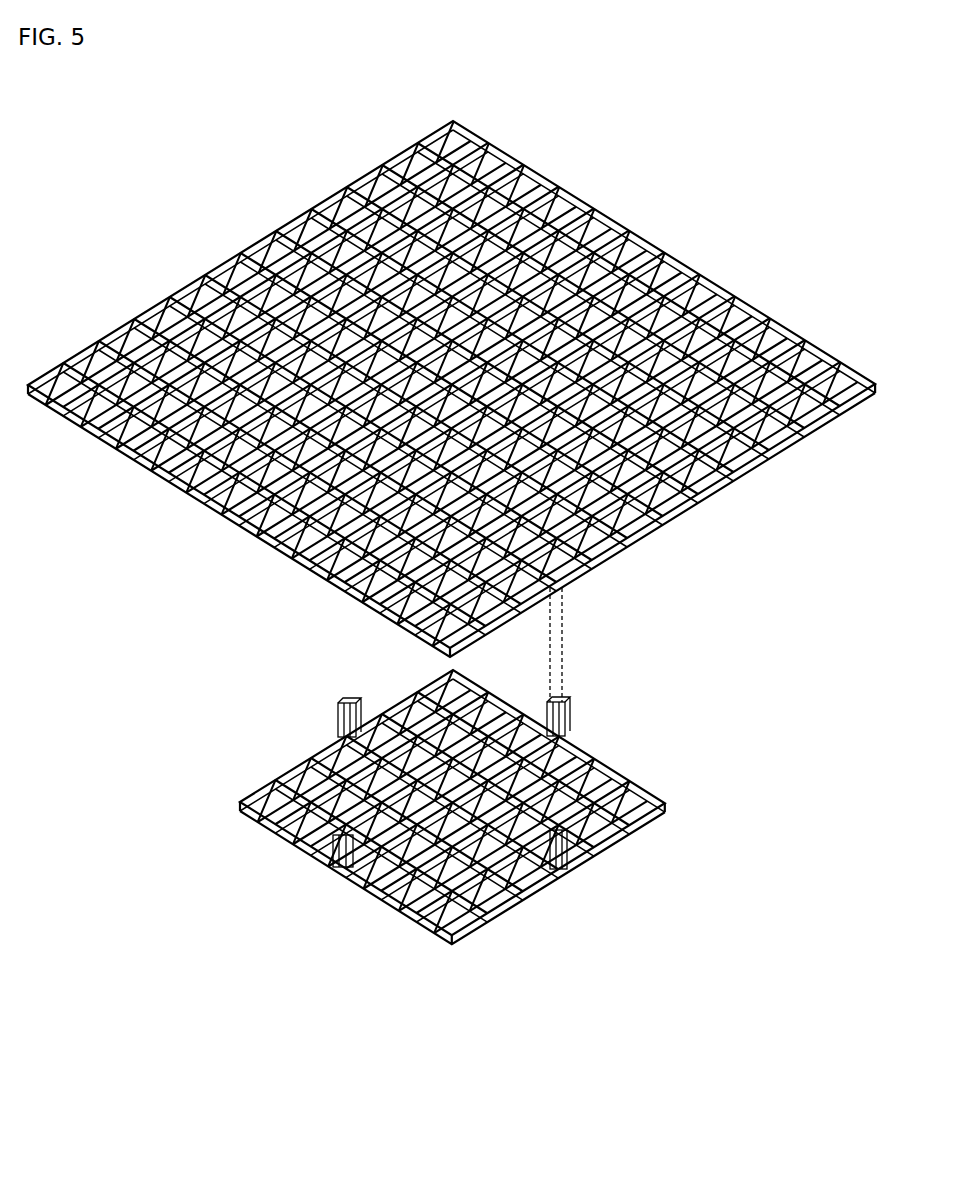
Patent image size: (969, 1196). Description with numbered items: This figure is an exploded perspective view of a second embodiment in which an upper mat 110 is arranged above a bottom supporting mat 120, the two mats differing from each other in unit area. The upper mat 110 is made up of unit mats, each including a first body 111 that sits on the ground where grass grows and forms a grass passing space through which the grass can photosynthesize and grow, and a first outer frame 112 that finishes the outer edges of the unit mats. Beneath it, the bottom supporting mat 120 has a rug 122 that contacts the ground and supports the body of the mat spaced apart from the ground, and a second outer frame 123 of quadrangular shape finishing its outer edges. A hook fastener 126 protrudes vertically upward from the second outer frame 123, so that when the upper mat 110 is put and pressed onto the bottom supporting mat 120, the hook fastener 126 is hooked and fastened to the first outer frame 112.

The upper mat 110 is at (207, 243).
The first body 111 is at (223, 512).
The first outer frame 112 is at (295, 558).
The bottom supporting mat 120 is at (264, 768).
The rug 122 is at (430, 928).
The second outer frame 123 is at (363, 886).
The hook fastener 126 is at (583, 858).